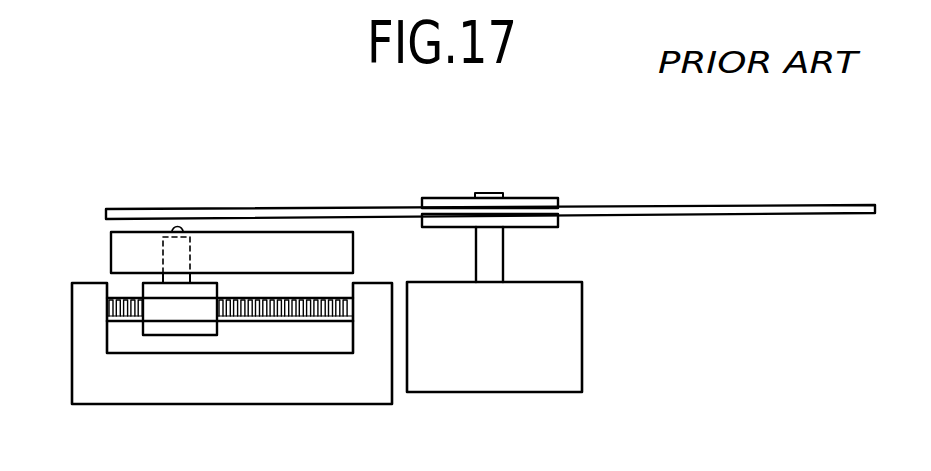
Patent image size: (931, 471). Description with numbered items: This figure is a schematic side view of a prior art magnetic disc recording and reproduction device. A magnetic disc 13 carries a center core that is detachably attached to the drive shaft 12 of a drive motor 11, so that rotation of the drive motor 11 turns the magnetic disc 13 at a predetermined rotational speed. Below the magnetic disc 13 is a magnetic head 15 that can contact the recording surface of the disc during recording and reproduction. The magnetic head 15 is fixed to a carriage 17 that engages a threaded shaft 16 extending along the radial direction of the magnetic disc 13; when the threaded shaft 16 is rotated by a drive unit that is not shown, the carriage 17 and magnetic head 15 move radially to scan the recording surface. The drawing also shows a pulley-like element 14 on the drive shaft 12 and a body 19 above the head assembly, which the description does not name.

The drive motor 11 is at (563, 330).
The drive shaft 12 is at (494, 255).
The magnetic disc 13 is at (797, 202).
The pulley 14 is at (543, 198).
The magnetic head 15 is at (170, 287).
The threaded shaft 16 is at (277, 320).
The carriage 17 is at (203, 325).
The carriage 19 is at (122, 248).